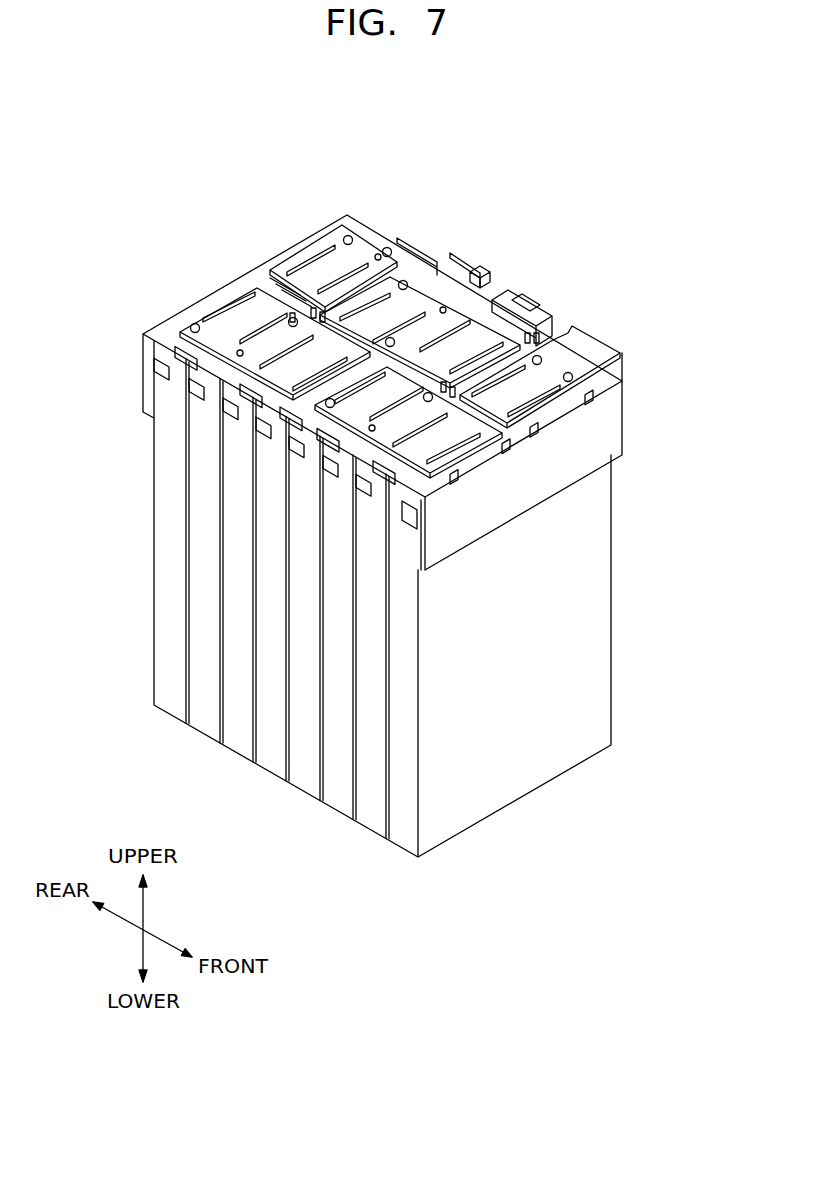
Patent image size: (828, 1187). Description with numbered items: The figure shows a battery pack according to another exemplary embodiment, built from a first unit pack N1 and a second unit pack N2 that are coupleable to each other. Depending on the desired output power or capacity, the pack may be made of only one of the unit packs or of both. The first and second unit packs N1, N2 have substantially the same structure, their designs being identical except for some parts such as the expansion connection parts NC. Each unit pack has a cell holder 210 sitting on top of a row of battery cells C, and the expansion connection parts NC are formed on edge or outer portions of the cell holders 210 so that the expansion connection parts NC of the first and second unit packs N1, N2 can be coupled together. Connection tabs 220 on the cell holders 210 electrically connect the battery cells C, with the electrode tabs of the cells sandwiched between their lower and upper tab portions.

The cell holder 210 is at (620, 416).
The connection tab 220 is at (603, 343).
The battery cell C is at (597, 597).
The first unit pack N1 is at (585, 258).
The second unit pack N2 is at (440, 192).
The expansion connection part NC is at (492, 285).